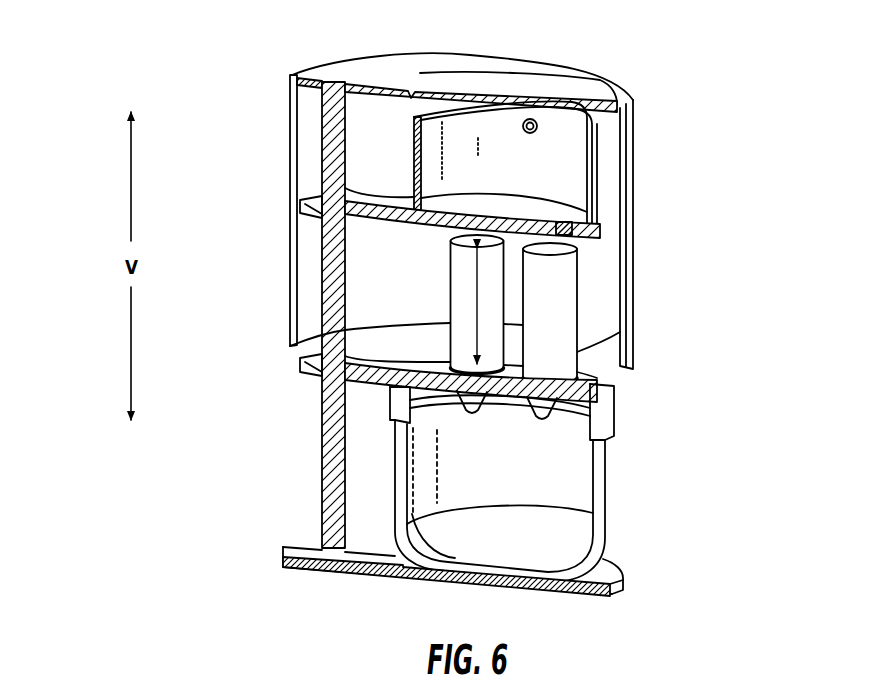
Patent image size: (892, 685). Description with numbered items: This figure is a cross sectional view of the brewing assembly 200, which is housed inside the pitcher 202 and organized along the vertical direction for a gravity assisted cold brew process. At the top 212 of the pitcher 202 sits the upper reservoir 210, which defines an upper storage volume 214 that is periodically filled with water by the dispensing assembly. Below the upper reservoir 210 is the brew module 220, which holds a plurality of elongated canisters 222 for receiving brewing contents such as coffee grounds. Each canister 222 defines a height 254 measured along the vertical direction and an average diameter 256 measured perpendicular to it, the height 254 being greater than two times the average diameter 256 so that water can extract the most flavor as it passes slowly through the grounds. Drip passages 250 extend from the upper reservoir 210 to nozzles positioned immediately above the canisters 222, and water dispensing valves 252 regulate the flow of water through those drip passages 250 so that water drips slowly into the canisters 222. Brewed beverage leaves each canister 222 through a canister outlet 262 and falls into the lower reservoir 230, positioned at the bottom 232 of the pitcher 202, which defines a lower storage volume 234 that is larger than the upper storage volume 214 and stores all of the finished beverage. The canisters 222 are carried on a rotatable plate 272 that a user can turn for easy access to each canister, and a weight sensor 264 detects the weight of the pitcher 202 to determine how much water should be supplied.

The brewing assembly 200 is at (686, 77).
The pitcher 202 is at (637, 262).
The upper reservoir 210 is at (600, 157).
The top 212 is at (288, 80).
The upper storage volume 214 is at (554, 126).
The brew module 220 is at (599, 327).
The canisters 222 is at (566, 290).
The lower reservoir 230 is at (602, 462).
The bottom 232 is at (632, 573).
The lower storage volume 234 is at (530, 512).
The drip passages 250 is at (600, 230).
The water dispensing valves 252 is at (566, 226).
The height 254 is at (451, 292).
The average diameter 256 is at (520, 249).
The canister outlet 262 is at (543, 426).
The weight sensor 264 is at (572, 588).
The rotatable plate 272 is at (597, 382).